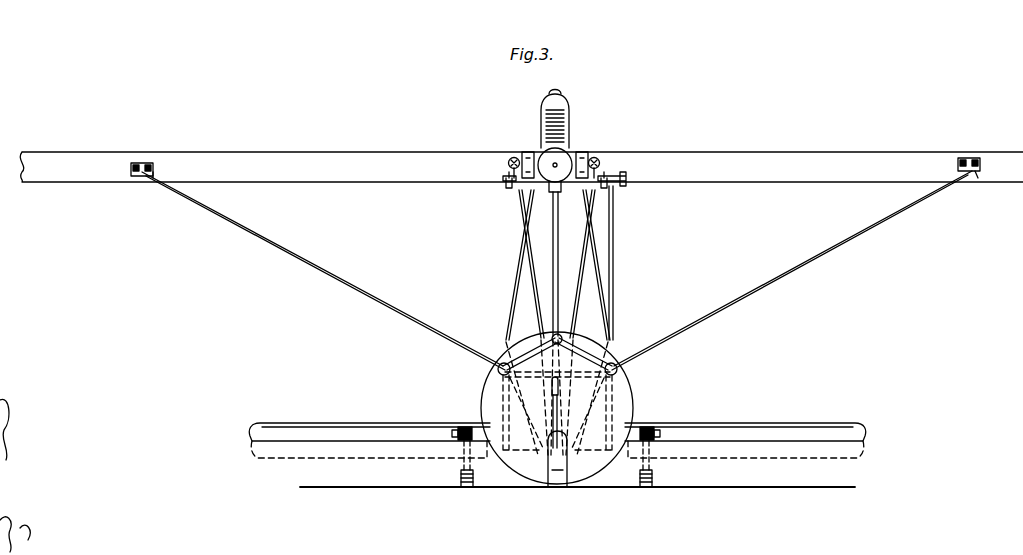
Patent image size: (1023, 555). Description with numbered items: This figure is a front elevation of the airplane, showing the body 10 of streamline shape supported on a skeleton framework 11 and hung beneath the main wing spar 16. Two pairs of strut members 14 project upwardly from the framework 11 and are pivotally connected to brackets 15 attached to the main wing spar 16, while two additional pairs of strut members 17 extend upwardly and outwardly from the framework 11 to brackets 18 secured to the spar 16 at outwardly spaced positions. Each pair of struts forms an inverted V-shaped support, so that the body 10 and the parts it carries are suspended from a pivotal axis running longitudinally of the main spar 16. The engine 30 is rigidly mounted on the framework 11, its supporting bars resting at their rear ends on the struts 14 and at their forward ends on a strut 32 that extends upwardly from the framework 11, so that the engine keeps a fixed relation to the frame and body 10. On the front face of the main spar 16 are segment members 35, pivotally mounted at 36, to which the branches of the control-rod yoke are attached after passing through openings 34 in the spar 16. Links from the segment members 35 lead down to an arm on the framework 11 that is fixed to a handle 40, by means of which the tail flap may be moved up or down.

The body 10 is at (556, 408).
The skeleton framework 11 is at (500, 403).
The strut members 14 is at (518, 282).
The brackets 15 is at (527, 152).
The main wing spar 16 is at (790, 160).
The strut members 17 is at (344, 282).
The brackets 18 is at (130, 178).
The engine 30 is at (566, 150).
The strut 32 is at (553, 262).
The openings 34 is at (508, 168).
The segment members 35 is at (506, 174).
The pivot 36 is at (506, 184).
The handle 40 is at (553, 385).